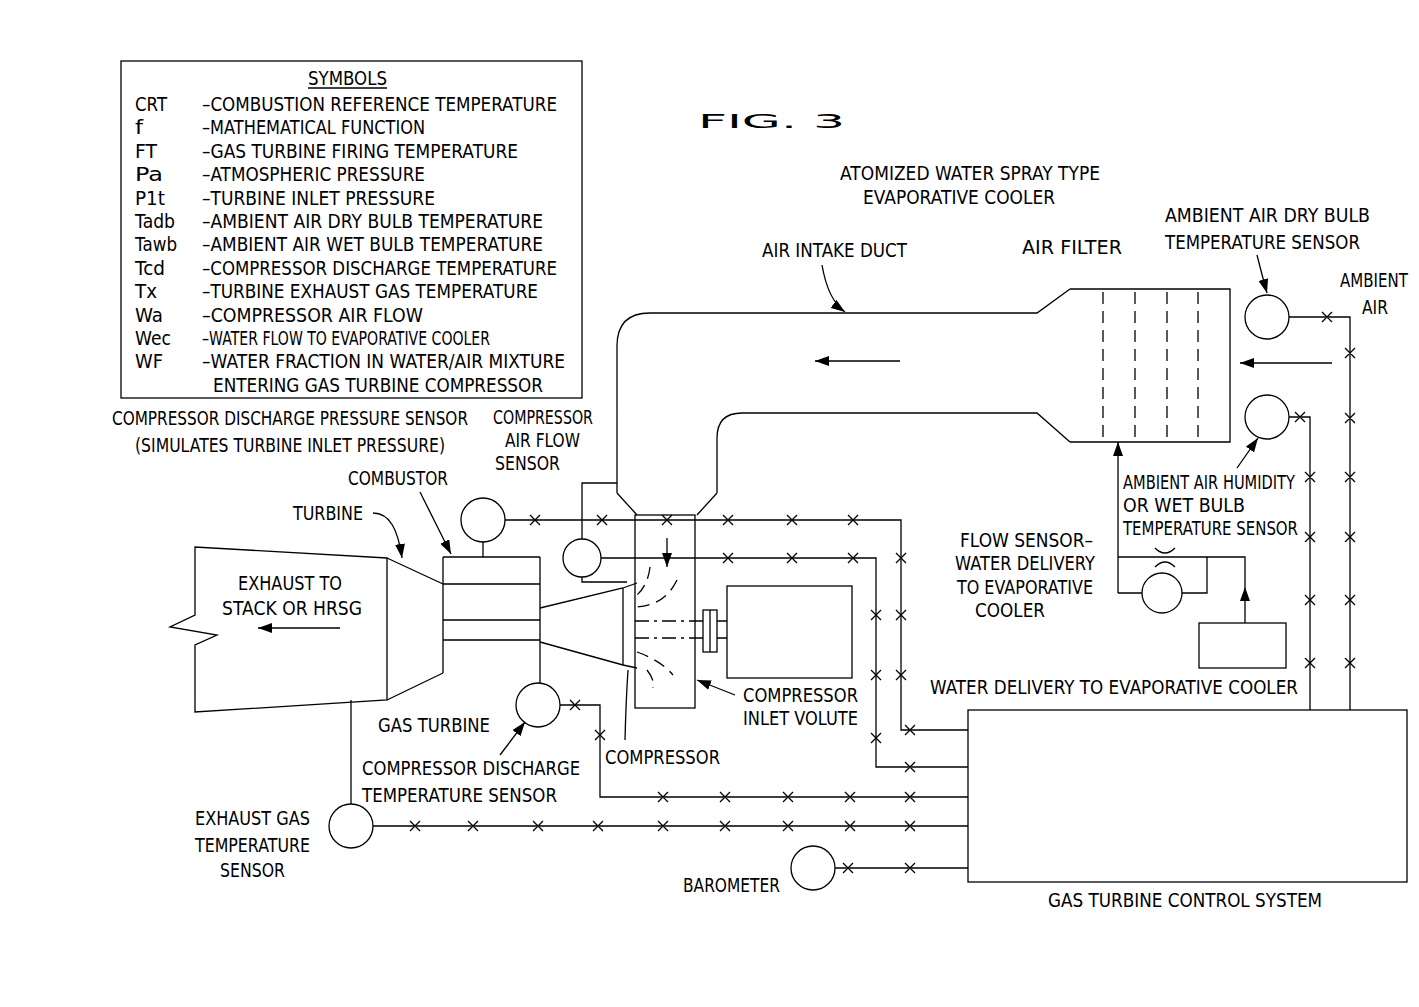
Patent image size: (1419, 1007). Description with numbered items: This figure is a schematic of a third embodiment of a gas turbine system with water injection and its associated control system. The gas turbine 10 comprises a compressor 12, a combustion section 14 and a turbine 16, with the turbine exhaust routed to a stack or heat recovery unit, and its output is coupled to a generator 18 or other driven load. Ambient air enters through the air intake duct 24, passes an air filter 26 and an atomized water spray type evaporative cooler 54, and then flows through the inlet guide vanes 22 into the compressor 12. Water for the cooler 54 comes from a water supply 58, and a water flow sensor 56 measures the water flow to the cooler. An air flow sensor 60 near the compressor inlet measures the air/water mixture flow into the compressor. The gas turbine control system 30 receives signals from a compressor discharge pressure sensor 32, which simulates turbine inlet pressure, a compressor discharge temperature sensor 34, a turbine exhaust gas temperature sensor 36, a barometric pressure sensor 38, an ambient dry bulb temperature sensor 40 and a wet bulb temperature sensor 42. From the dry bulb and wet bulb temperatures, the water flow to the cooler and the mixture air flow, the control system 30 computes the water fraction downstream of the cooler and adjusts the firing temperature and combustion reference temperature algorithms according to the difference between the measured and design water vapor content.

The gas turbine 10 is at (500, 670).
The compressor 12 is at (596, 636).
The combustion section 14 is at (500, 578).
The turbine 16 is at (422, 638).
The generator 18 is at (757, 586).
The inlet guide vanes 22 is at (602, 664).
The air intake duct 24 is at (670, 422).
The air filter 26 is at (1163, 325).
The gas turbine control system 30 is at (1192, 868).
The compressor discharge pressure sensor 32 is at (480, 497).
The compressor discharge temperature sensor 34 is at (545, 727).
The turbine exhaust gas temperature sensor 36 is at (333, 811).
The barometric pressure sensor 38 is at (791, 866).
The dry bulb temperature sensor 40 is at (1278, 298).
The wet bulb temperature sensor 42 is at (1278, 439).
The atomized water spray type evaporative cooler 54 is at (1103, 347).
The water flow sensor 56 is at (1143, 600).
The water supply 58 is at (1199, 645).
The air flow sensor 60 is at (574, 541).